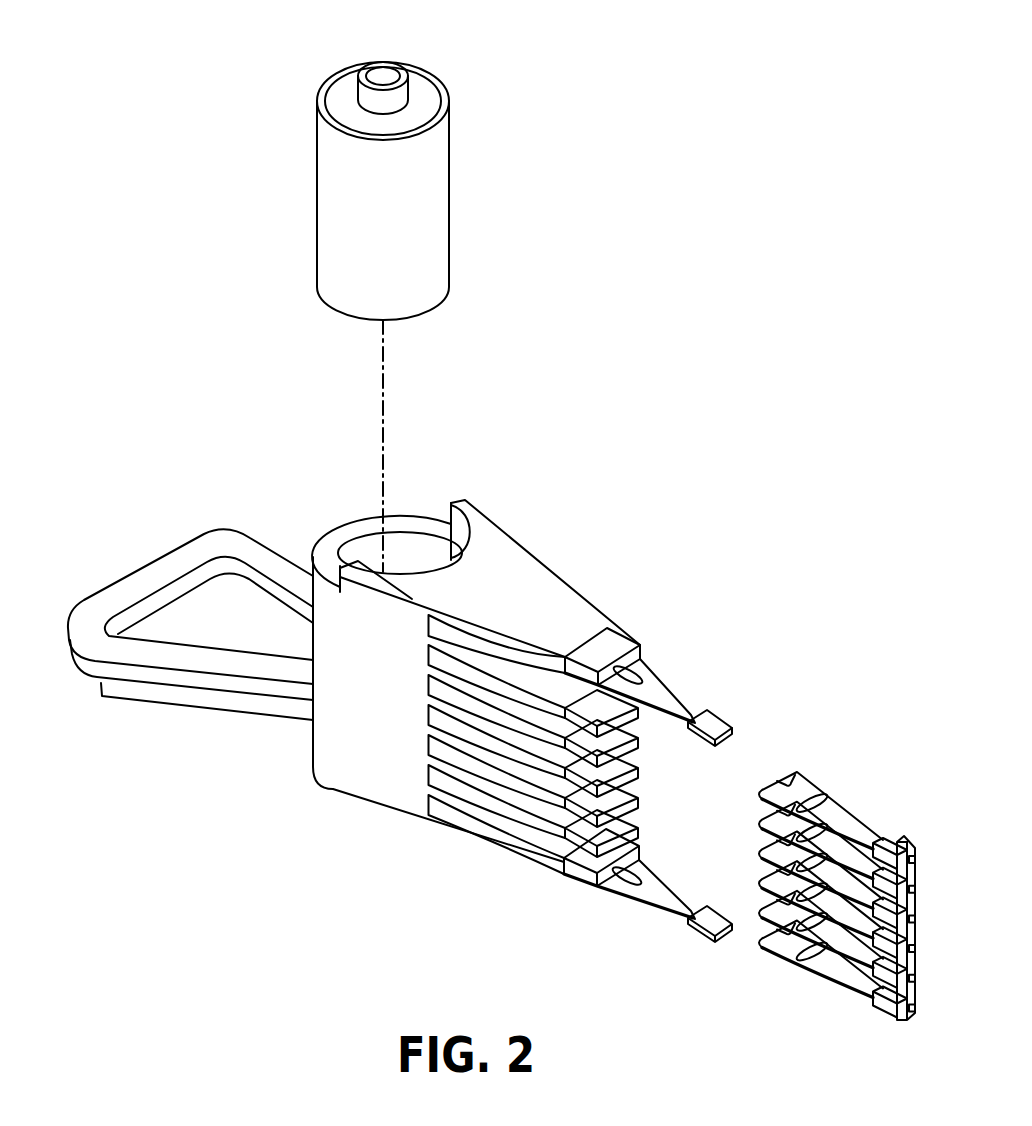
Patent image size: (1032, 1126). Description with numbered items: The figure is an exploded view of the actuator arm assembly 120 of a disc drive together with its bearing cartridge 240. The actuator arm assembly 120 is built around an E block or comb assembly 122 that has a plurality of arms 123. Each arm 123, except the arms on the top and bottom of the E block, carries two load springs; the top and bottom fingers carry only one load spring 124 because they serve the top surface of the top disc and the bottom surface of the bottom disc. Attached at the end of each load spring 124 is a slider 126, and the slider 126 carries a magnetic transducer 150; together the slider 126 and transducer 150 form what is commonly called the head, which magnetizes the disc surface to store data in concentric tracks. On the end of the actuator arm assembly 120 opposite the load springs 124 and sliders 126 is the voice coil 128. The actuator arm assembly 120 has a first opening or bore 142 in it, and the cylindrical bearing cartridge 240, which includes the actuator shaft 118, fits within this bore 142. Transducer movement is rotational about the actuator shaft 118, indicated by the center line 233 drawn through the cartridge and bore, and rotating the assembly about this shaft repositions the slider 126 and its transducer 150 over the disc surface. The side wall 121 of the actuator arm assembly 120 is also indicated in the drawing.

The actuator shaft 118 is at (387, 62).
The bearing cartridge 240 is at (449, 193).
The central axis 233 is at (385, 421).
The bore 142 is at (457, 530).
The arm 123 is at (538, 587).
The voice coil 128 is at (138, 565).
The actuator arm assembly 120 is at (362, 788).
The housing side wall 121 is at (332, 738).
The comb assembly 122 is at (497, 845).
The load spring 124 is at (653, 690).
The magnetic transducer 150 is at (737, 728).
The slider 126 is at (716, 742).